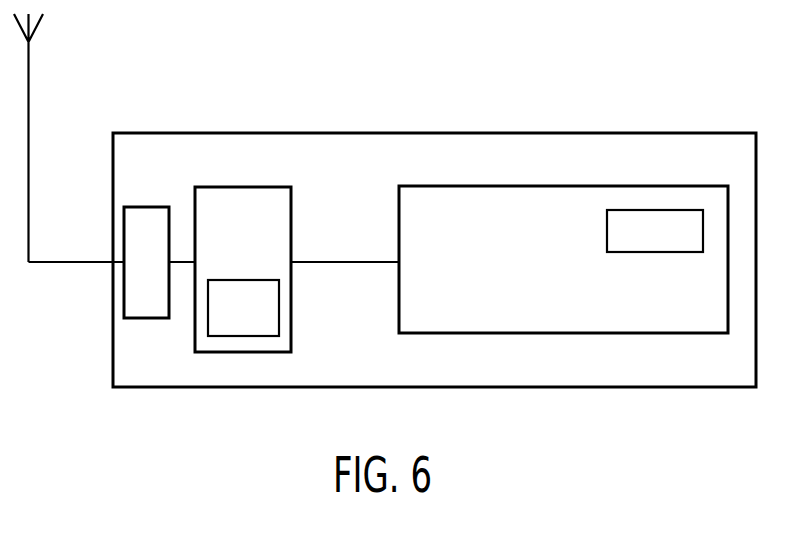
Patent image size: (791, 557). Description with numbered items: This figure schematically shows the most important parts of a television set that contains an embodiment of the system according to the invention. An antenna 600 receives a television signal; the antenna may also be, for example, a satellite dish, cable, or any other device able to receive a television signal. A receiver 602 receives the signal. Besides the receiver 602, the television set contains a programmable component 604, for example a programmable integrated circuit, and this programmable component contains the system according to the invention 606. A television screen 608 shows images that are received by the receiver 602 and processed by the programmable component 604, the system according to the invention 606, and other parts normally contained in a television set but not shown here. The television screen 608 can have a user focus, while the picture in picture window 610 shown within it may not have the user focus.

The antenna 600 is at (29, 106).
The receiver 602 is at (152, 207).
The programmable component 604 is at (265, 187).
The system according to the invention 606 is at (279, 322).
The television screen 608 is at (520, 186).
The picture in picture window 610 is at (651, 210).